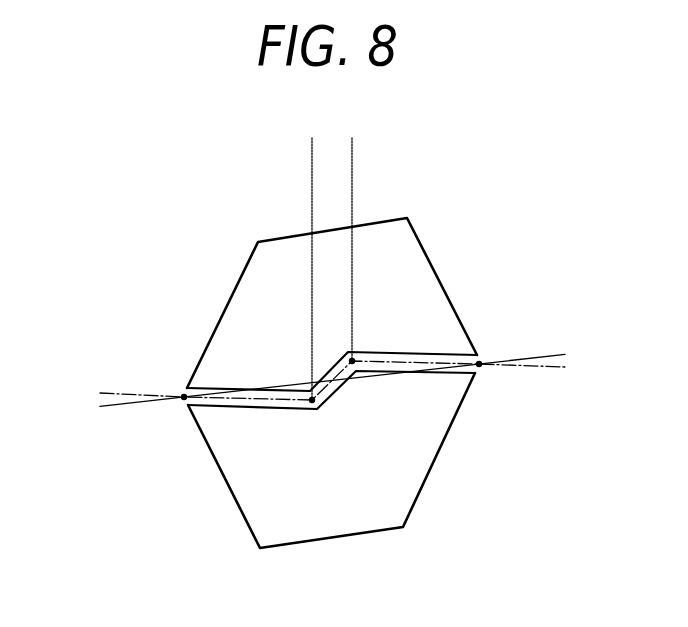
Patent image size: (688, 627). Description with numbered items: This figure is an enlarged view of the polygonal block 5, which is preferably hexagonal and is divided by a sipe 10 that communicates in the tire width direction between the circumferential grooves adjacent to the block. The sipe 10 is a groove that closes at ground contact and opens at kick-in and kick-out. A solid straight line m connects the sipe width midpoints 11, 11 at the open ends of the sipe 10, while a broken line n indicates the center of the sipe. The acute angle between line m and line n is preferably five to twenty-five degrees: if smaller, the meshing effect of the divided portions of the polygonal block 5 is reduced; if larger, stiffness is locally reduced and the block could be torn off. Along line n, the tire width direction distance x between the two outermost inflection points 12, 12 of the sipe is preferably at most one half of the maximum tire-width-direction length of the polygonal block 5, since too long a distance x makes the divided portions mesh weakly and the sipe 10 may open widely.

The polygonal block 5 is at (411, 238).
The sipe 10 is at (260, 404).
The sipe width midpoints 11 is at (183, 395).
The tire width direction outermost inflection points 12 is at (308, 390).
The tire width direction distance x is at (313, 151).
The straight line m is at (552, 357).
The line indicating a center of the sipe n is at (552, 370).